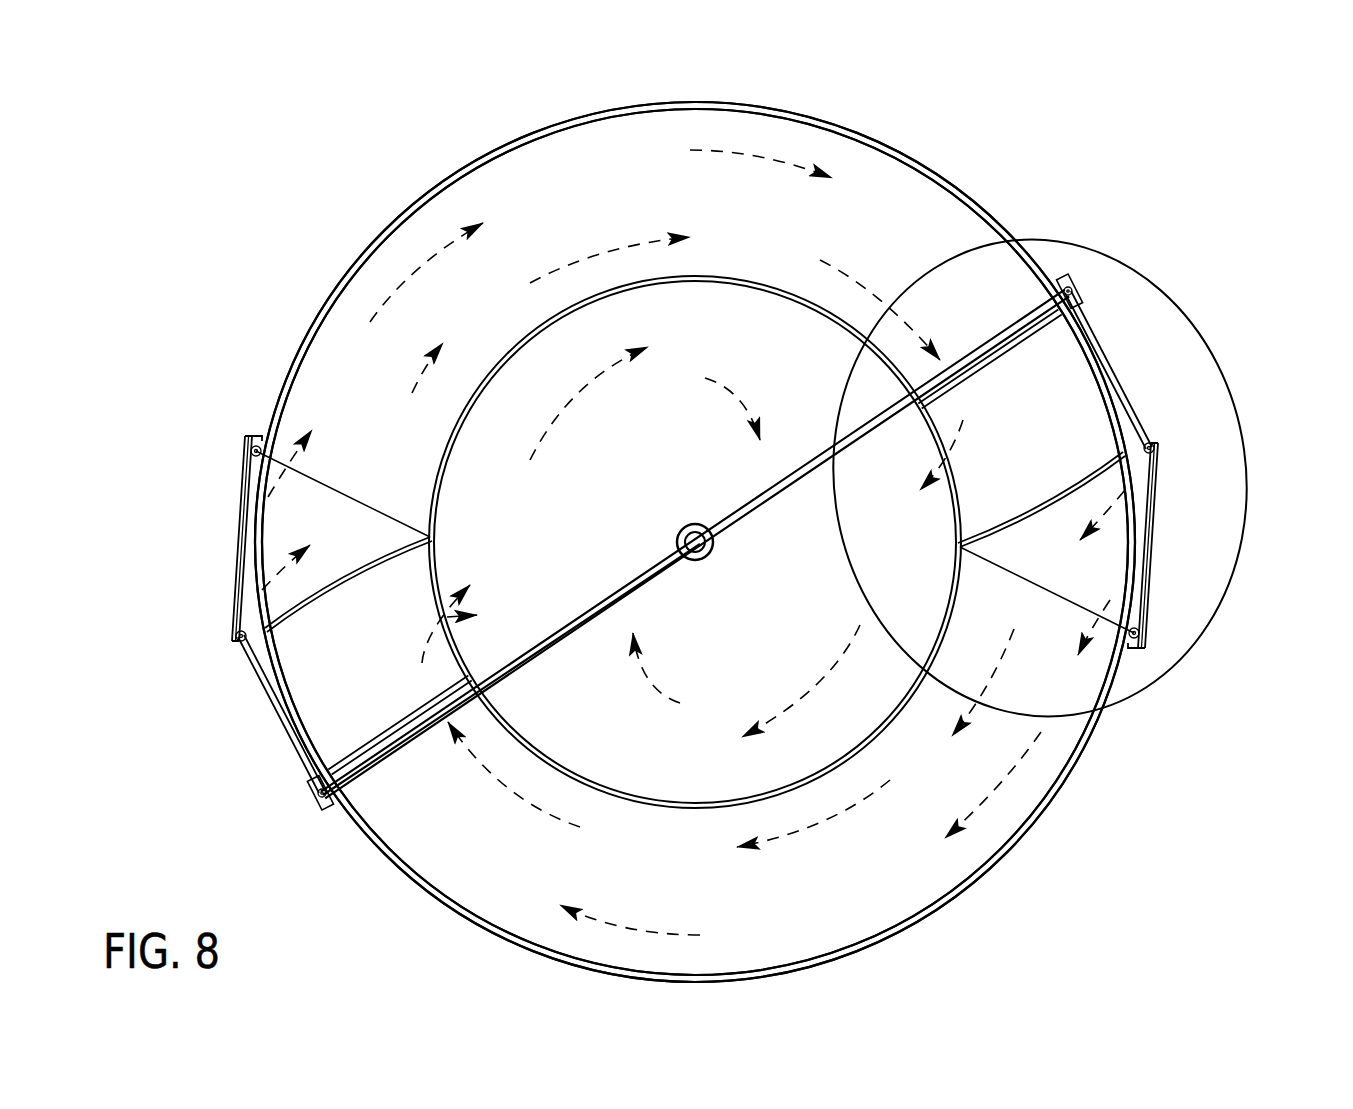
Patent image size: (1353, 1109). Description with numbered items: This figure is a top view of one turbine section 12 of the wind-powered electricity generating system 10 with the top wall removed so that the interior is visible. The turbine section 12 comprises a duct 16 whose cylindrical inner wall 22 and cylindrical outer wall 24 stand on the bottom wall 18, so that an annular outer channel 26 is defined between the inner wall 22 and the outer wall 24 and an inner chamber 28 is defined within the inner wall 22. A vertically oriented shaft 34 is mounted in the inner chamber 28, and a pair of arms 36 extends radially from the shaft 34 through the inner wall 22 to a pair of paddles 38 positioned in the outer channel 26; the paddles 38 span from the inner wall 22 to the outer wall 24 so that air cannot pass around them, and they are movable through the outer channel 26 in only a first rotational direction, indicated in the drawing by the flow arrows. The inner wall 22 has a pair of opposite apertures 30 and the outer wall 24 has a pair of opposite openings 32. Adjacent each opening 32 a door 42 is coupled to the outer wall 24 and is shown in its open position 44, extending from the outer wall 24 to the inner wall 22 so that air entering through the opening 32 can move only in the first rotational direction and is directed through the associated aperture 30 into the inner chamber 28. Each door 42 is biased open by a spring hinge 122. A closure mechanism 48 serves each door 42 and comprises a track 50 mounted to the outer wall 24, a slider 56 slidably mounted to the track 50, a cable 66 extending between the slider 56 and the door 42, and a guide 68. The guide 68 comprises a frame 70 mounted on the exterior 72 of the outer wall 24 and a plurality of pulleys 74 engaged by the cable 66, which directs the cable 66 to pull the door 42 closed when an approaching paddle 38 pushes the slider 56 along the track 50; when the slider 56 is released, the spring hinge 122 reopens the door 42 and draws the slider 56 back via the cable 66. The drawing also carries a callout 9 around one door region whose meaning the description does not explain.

The detail region of FIG. 9 is at (1222, 367).
The wind-powered electricity generating system 10 is at (248, 198).
The turbine section 12 is at (480, 128).
The duct 16 is at (408, 190).
The bottom wall 18 is at (618, 152).
The inner wall 22 is at (762, 298).
The outer wall 24 is at (890, 150).
The outer channel 26 is at (910, 873).
The inner chamber 28 is at (679, 764).
The aperture 30 is at (452, 622).
The opening 32 is at (255, 530).
The shaft 34 is at (690, 535).
The arm 36 is at (637, 592).
The paddle 38 is at (392, 734).
The door 42 is at (318, 592).
The open position 44 is at (417, 512).
The closure mechanism 48 is at (321, 828).
The track 50 is at (268, 694).
The slider 56 is at (306, 777).
The cable 66 is at (333, 478).
The guide 68 is at (205, 637).
The frame 70 is at (268, 722).
The exterior 72 is at (315, 330).
The pulley 74 is at (252, 453).
The spring hinge 122 is at (262, 650).